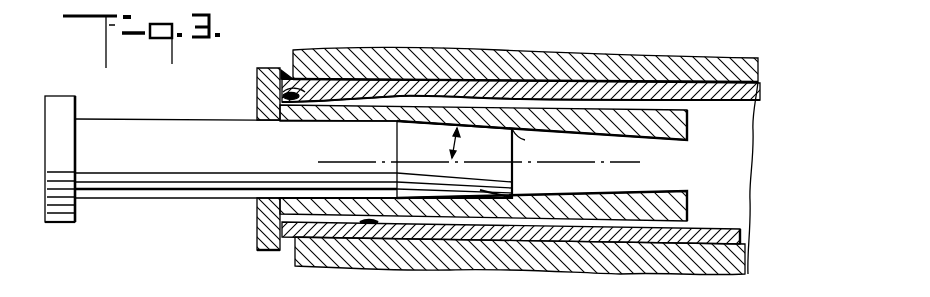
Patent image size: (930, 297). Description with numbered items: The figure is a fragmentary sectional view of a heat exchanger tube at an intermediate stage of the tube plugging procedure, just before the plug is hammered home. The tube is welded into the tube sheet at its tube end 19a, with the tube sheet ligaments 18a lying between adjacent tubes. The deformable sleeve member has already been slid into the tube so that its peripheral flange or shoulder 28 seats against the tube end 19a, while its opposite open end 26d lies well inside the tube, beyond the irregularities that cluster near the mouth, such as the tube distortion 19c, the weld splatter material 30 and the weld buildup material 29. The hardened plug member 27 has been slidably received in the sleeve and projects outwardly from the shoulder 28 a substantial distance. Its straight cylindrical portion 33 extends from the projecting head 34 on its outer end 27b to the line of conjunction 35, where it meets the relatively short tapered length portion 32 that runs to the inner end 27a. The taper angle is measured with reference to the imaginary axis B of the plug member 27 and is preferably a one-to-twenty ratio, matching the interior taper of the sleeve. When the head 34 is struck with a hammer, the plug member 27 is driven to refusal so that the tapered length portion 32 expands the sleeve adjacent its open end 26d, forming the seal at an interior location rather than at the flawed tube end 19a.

The plug member 27 is at (221, 168).
The inner end of plug member 27a is at (513, 135).
The outer end of plug member 27b is at (45, 140).
The peripheral flange 28 is at (256, 76).
The weld buildup material 29 is at (284, 70).
The weld splatter material 30 is at (293, 96).
The tube sheet ligaments 18a is at (365, 50).
The tube distortion 19c is at (418, 92).
The tube end 19a is at (293, 238).
The open end of sleeve member 26d is at (690, 128).
The tapered length portion 32 is at (514, 176).
The straight cylindrical portion 33 is at (183, 201).
The head 34 is at (63, 223).
The line of conjunction 35 is at (397, 140).
The imaginary axis of plug member B is at (313, 160).